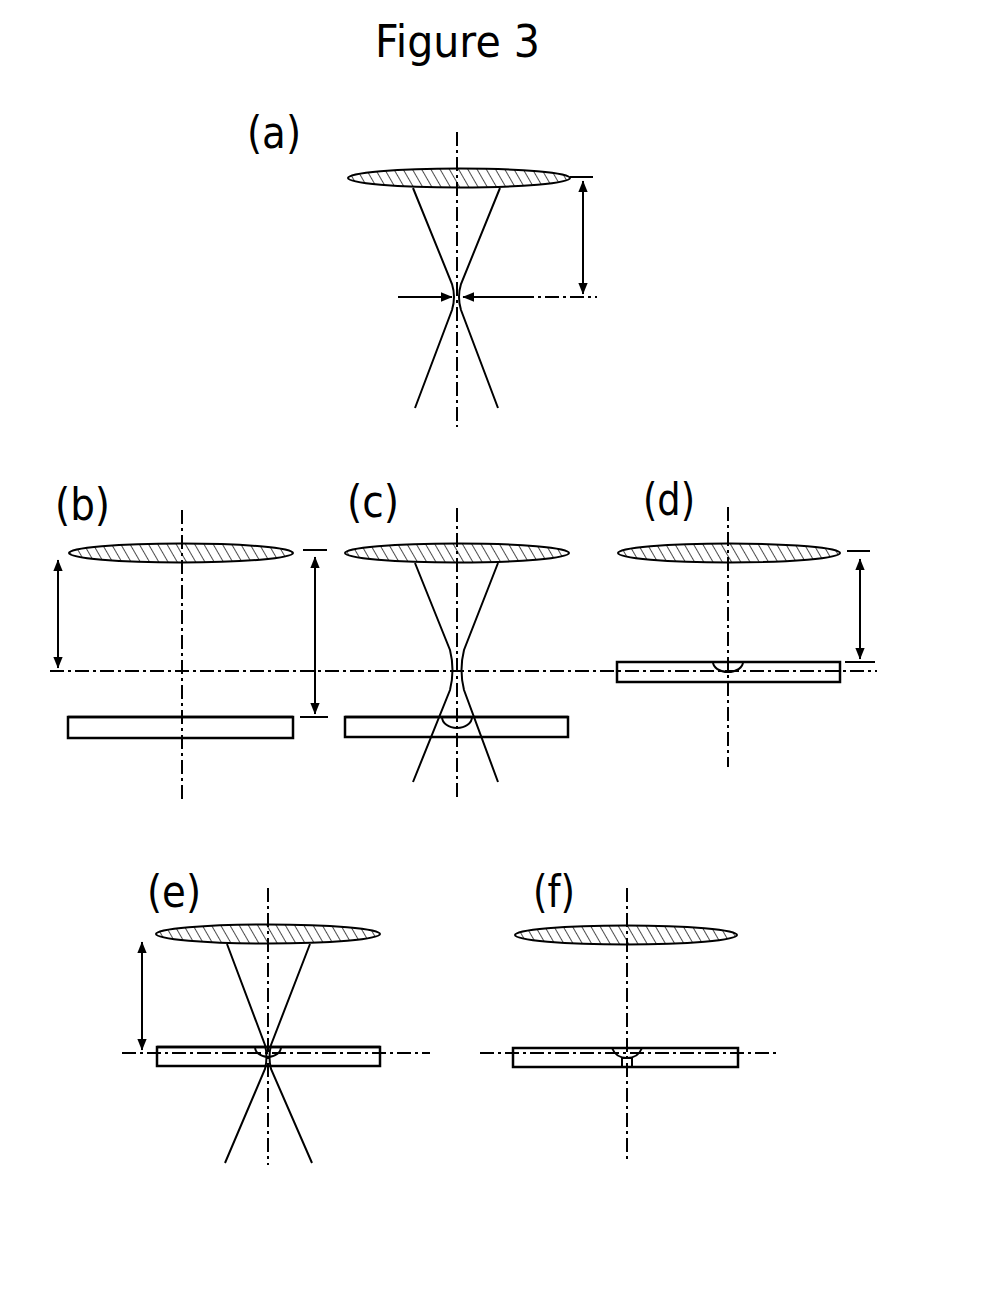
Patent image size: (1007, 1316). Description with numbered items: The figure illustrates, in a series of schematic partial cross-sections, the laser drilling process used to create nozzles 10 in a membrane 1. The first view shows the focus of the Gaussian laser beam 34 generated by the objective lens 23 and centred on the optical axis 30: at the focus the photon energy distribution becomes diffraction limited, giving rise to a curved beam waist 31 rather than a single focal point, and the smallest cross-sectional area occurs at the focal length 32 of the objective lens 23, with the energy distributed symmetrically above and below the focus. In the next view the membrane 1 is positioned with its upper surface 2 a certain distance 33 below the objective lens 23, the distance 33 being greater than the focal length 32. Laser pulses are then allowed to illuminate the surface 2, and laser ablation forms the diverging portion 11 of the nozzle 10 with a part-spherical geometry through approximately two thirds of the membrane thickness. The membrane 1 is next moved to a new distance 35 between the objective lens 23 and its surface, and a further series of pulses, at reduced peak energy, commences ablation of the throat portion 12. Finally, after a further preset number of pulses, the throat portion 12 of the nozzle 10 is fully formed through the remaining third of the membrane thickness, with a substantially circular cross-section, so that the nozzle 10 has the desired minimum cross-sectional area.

The membrane 1 is at (108, 738).
The upper surface of the membrane 2 is at (220, 718).
The nozzle 10 is at (630, 1047).
The diverging portion 11 is at (471, 729).
The throat portion 12 is at (634, 1067).
The objective lens 23 is at (503, 168).
The optical axis 30 is at (455, 142).
The beam waist 31 is at (452, 293).
The focal length 32 is at (583, 248).
The distance 33 is at (297, 633).
The laser beam 34 is at (480, 353).
The new distance 35 is at (841, 606).